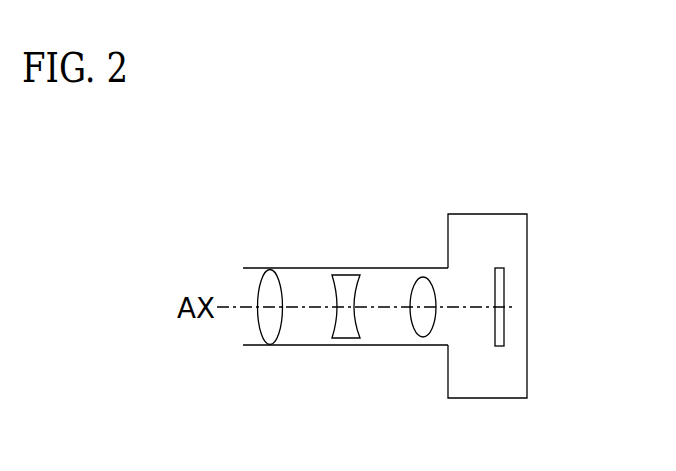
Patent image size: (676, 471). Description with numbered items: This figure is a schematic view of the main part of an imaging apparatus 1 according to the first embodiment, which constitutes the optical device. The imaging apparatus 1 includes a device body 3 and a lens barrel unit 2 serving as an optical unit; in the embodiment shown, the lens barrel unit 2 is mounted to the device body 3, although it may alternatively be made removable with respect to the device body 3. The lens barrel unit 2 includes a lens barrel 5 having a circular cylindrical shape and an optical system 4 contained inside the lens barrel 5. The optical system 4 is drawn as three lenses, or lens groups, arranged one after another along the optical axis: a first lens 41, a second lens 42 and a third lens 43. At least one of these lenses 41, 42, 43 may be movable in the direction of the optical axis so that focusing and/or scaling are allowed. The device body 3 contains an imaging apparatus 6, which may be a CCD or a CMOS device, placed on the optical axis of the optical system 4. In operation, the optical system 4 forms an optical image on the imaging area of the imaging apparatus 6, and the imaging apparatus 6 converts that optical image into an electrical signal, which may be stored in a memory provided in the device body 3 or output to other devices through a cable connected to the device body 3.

The imaging apparatus 1 is at (549, 163).
The lens barrel unit 2 is at (345, 259).
The device body 3 is at (484, 211).
The optical system 4 is at (438, 405).
The lens barrel 5 is at (397, 267).
The imaging apparatus 6 is at (504, 288).
The first lens 41 is at (278, 344).
The second lens 42 is at (348, 340).
The third lens 43 is at (424, 339).